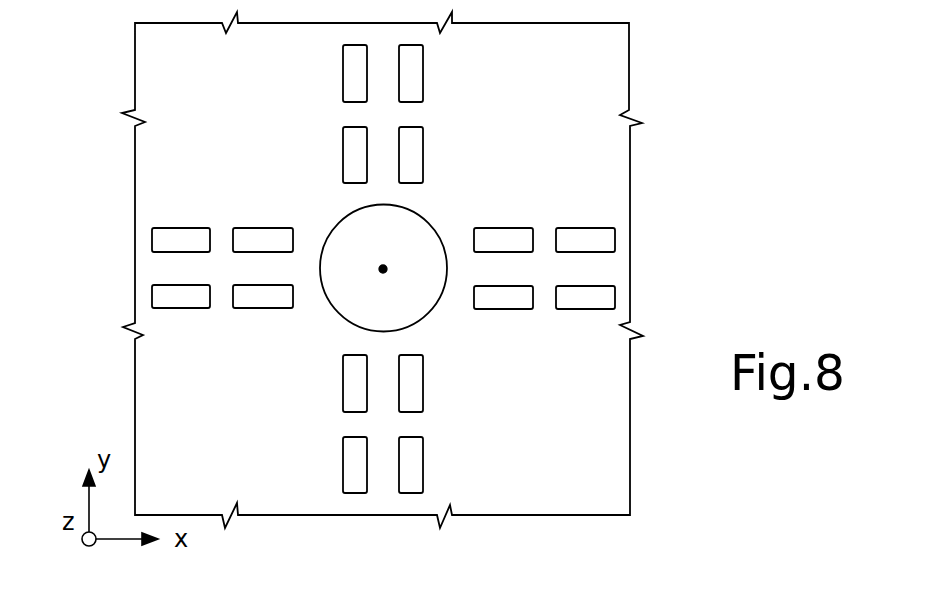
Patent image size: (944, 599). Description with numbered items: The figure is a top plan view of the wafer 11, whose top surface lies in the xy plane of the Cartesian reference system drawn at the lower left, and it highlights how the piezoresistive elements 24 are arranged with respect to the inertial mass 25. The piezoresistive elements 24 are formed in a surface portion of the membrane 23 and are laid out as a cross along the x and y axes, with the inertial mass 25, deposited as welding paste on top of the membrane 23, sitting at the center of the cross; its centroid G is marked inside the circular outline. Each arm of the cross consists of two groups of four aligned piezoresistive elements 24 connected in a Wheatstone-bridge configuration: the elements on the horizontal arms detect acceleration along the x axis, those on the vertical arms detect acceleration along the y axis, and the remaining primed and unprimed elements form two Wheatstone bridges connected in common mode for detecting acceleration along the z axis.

The wafer 11 is at (684, 153).
The membrane 23 is at (618, 463).
The piezoresistive elements 24 is at (598, 242).
The inertial mass 25 is at (348, 236).